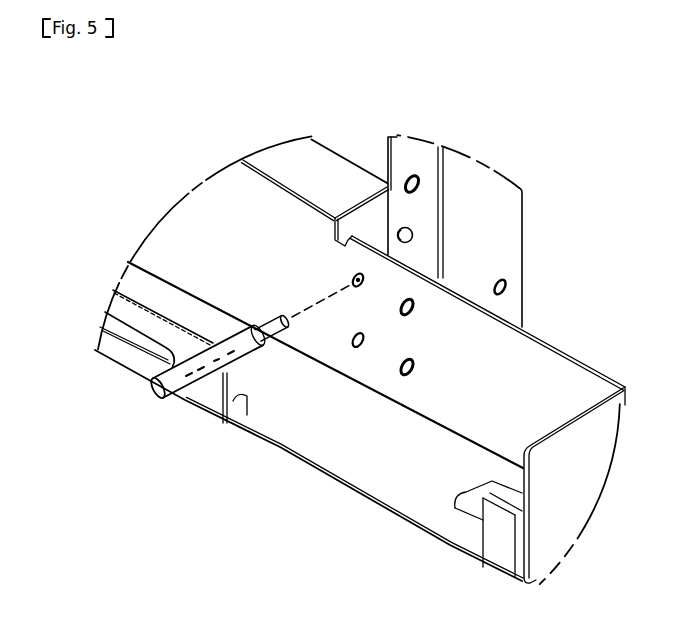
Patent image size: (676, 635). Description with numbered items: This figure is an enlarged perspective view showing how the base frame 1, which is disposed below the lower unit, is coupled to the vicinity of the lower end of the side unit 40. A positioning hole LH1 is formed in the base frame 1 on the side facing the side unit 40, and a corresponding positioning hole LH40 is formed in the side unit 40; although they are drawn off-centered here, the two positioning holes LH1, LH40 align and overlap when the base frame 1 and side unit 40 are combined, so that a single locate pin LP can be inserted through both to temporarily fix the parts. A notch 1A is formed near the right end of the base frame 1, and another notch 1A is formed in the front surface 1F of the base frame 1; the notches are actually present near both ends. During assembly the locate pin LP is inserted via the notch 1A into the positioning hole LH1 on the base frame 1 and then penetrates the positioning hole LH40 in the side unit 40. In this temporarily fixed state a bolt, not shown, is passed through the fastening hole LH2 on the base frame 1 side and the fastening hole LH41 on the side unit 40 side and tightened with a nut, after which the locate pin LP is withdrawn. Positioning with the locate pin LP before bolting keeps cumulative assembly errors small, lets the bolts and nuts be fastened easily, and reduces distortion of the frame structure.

The base frame 1 is at (346, 379).
The notch 1A is at (240, 397).
The front surface 1F is at (128, 358).
The positioning hole LH1 is at (358, 288).
The fastening hole LH2 is at (362, 348).
The locate pin LP is at (160, 400).
The side unit 40 is at (490, 205).
The positioning hole LH40 is at (413, 174).
The fastening hole LH41 is at (413, 235).